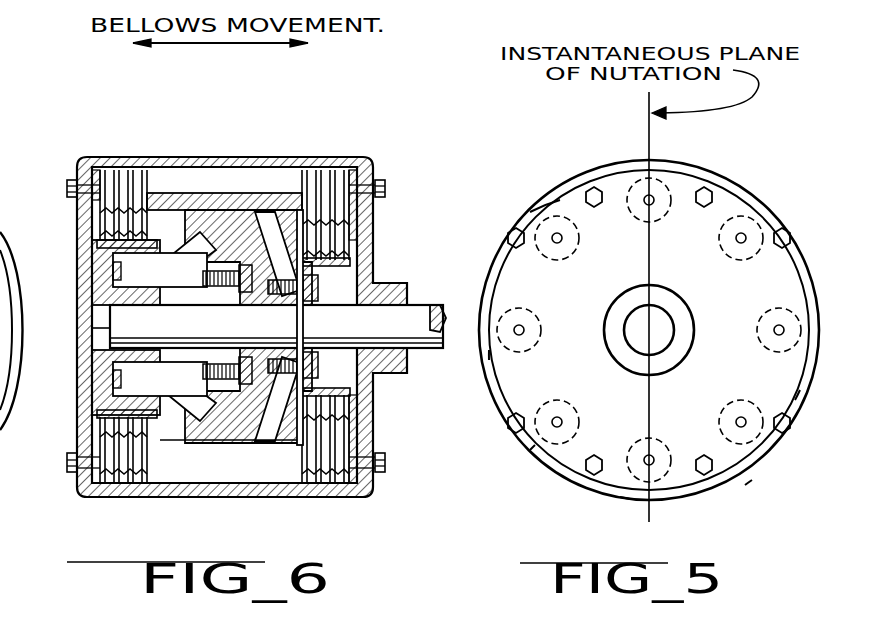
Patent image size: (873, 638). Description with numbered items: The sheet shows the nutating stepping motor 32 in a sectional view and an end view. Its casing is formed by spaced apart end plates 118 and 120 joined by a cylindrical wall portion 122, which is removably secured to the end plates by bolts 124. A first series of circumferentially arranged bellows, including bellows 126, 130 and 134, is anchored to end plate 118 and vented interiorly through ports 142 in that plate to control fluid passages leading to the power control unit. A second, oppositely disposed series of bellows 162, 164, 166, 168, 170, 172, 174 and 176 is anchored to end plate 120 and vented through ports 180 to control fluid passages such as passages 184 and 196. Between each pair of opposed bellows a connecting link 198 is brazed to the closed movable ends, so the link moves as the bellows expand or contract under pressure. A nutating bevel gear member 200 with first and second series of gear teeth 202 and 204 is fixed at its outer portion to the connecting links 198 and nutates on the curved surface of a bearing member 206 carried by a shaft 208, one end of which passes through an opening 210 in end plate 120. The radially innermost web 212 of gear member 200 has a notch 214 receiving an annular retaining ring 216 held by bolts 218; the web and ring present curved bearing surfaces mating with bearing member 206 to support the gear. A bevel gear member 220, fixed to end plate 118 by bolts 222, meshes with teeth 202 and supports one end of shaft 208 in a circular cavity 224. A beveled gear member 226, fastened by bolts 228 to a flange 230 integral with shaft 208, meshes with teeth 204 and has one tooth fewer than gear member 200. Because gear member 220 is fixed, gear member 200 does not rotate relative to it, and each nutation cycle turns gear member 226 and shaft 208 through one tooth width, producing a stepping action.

In FIG. 6, the nutating stepping motor 32 is at (368, 148).
In FIG. 6, the end plate 118 is at (80, 240).
In FIG. 6, the end plate 120 is at (375, 225).
In FIG. 6, the cylindrical wall portion 122 is at (232, 193).
In FIG. 6, the bolts 124 is at (73, 180).
In FIG. 5, the bolts 124 is at (708, 195).
In FIG. 6, the bellows 126 is at (128, 170).
In FIG. 6, the bellows 130 is at (22, 298).
In FIG. 6, the bellows 134 is at (125, 483).
In FIG. 6, the ports 142 is at (67, 188).
In FIG. 6, the bellows 162 is at (318, 185).
In FIG. 5, the bellows 162 is at (690, 168).
In FIG. 5, the bellows 164 is at (758, 225).
In FIG. 5, the bellows 166 is at (795, 392).
In FIG. 5, the bellows 168 is at (752, 478).
In FIG. 6, the bellows 170 is at (325, 483).
In FIG. 5, the bellows 170 is at (622, 495).
In FIG. 5, the bellows 172 is at (535, 450).
In FIG. 5, the bellows 174 is at (489, 372).
In FIG. 5, the bellows 176 is at (547, 212).
In FIG. 6, the ports 180 is at (388, 190).
In FIG. 5, the ports 180 is at (562, 238).
In FIG. 6, the control fluid passage 184 is at (178, 185).
In FIG. 5, the control fluid passage 196 is at (668, 330).
In FIG. 6, the connecting link 198 is at (272, 193).
In FIG. 5, the connecting link 198 is at (655, 303).
In FIG. 6, the nutating bevel gear member 200 is at (248, 257).
In FIG. 6, the first series of gear teeth 202 is at (185, 235).
In FIG. 6, the second series of gear teeth 204 is at (275, 245).
In FIG. 6, the bearing member 206 is at (232, 291).
In FIG. 6, the shaft 208 is at (240, 349).
In FIG. 6, the opening 210 is at (420, 305).
In FIG. 6, the web 212 is at (195, 395).
In FIG. 6, the notch 214 is at (245, 445).
In FIG. 6, the annular retaining ring 216 is at (306, 325).
In FIG. 6, the bolts 218 is at (190, 287).
In FIG. 6, the bevel gear member 220 is at (121, 380).
In FIG. 6, the bolts 222 is at (122, 268).
In FIG. 6, the circular cavity 224 is at (92, 328).
In FIG. 6, the beveled gear member 226 is at (250, 415).
In FIG. 6, the bolts 228 is at (315, 280).
In FIG. 6, the flange 230 is at (276, 326).